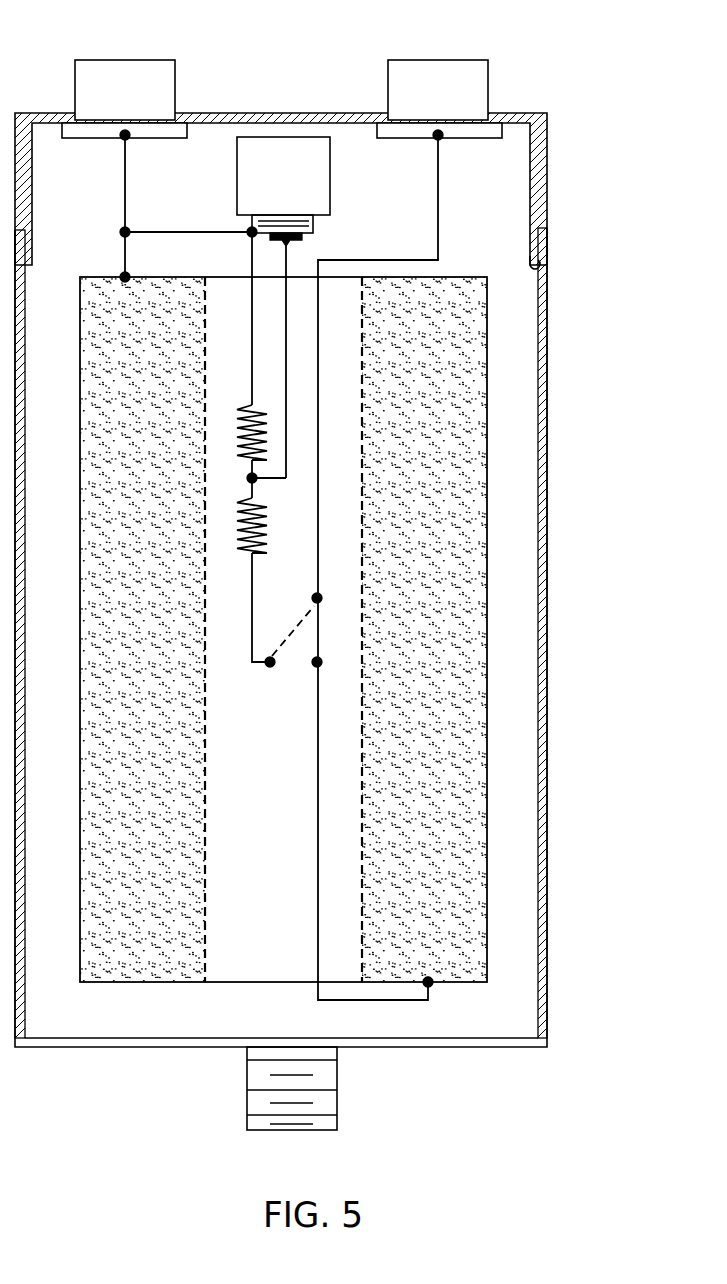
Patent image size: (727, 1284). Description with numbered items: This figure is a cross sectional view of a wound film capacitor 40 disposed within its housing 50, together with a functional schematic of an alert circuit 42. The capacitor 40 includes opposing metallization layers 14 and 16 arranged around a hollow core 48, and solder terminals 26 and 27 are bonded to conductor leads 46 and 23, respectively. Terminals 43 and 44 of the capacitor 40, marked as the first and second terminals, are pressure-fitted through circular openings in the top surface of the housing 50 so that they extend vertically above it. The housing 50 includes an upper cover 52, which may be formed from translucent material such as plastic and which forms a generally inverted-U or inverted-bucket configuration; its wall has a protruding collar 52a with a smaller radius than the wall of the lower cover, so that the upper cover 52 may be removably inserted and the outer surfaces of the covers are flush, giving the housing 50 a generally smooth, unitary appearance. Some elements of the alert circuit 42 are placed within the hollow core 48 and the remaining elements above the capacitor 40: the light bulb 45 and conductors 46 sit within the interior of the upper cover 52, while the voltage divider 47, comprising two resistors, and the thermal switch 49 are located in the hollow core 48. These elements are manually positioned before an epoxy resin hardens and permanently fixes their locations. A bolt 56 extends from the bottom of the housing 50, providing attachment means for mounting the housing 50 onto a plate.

The metallization layer 14 is at (457, 274).
The metallization layer 16 is at (141, 985).
The conductor lead 23 is at (316, 858).
The solder terminal 26 is at (121, 274).
The solder terminal 27 is at (432, 990).
The capacitor 40 is at (307, 632).
The alert circuit 42 is at (258, 68).
The terminal 43 is at (126, 58).
The terminal 44 is at (439, 58).
The light bulb 45 is at (284, 136).
The conductor 46 is at (122, 186).
The voltage divider 47 is at (226, 474).
The hollow core 48 is at (250, 970).
The thermal switch 49 is at (332, 627).
The housing 50 is at (547, 553).
The upper cover 52 is at (547, 143).
The protruding collar 52a is at (535, 266).
The bolt 56 is at (337, 1103).